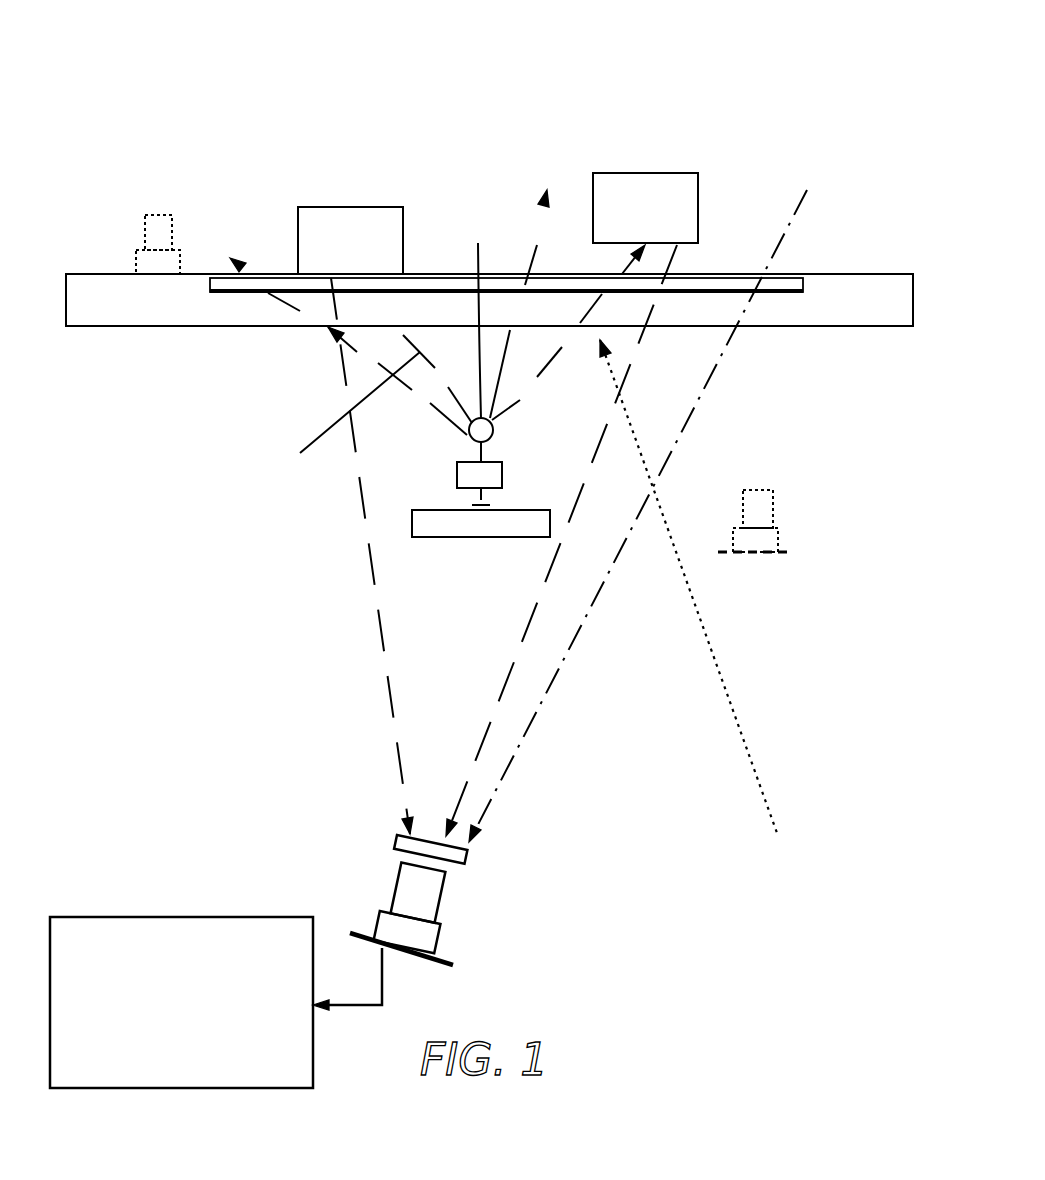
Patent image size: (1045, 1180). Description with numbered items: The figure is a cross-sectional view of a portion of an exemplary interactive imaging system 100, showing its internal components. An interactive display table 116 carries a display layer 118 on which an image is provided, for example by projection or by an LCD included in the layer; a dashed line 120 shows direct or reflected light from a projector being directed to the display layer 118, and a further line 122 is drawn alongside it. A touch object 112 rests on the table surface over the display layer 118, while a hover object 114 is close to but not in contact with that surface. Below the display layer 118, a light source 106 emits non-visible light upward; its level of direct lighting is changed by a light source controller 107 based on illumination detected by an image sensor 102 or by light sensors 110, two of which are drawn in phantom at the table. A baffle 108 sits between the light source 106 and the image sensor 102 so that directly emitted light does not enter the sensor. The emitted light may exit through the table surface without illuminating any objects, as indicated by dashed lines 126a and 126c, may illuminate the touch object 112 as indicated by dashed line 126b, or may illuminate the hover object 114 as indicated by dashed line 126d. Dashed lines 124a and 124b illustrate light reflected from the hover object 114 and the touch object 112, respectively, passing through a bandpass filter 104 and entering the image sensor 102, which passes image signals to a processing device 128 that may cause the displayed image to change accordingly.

The imaging system 100 is at (110, 47).
The image sensor 102 is at (397, 888).
The bandpass filter 104 is at (393, 832).
The light source 106 is at (467, 437).
The light source controller 107 is at (505, 473).
The baffle 108 is at (425, 537).
The light sensor 110 is at (145, 223).
The touch object 112 is at (298, 220).
The hover object 114 is at (593, 183).
The interactive display table 116 is at (138, 326).
The display layer 118 is at (245, 293).
The dashed line (projector light) 120 is at (750, 757).
The dash-dot line 122 is at (683, 420).
The dashed line (reflected light from hover object) 124a is at (517, 642).
The dashed line (reflected light from touch object) 124b is at (383, 638).
The dashed line (light exiting table surface) 126a is at (328, 327).
The dashed line (light illuminating touch object) 126b is at (353, 413).
The dashed line (light exiting table surface) 126c is at (479, 304).
The dashed line (light illuminating hover object) 126d is at (517, 407).
The processing device 128 is at (192, 915).